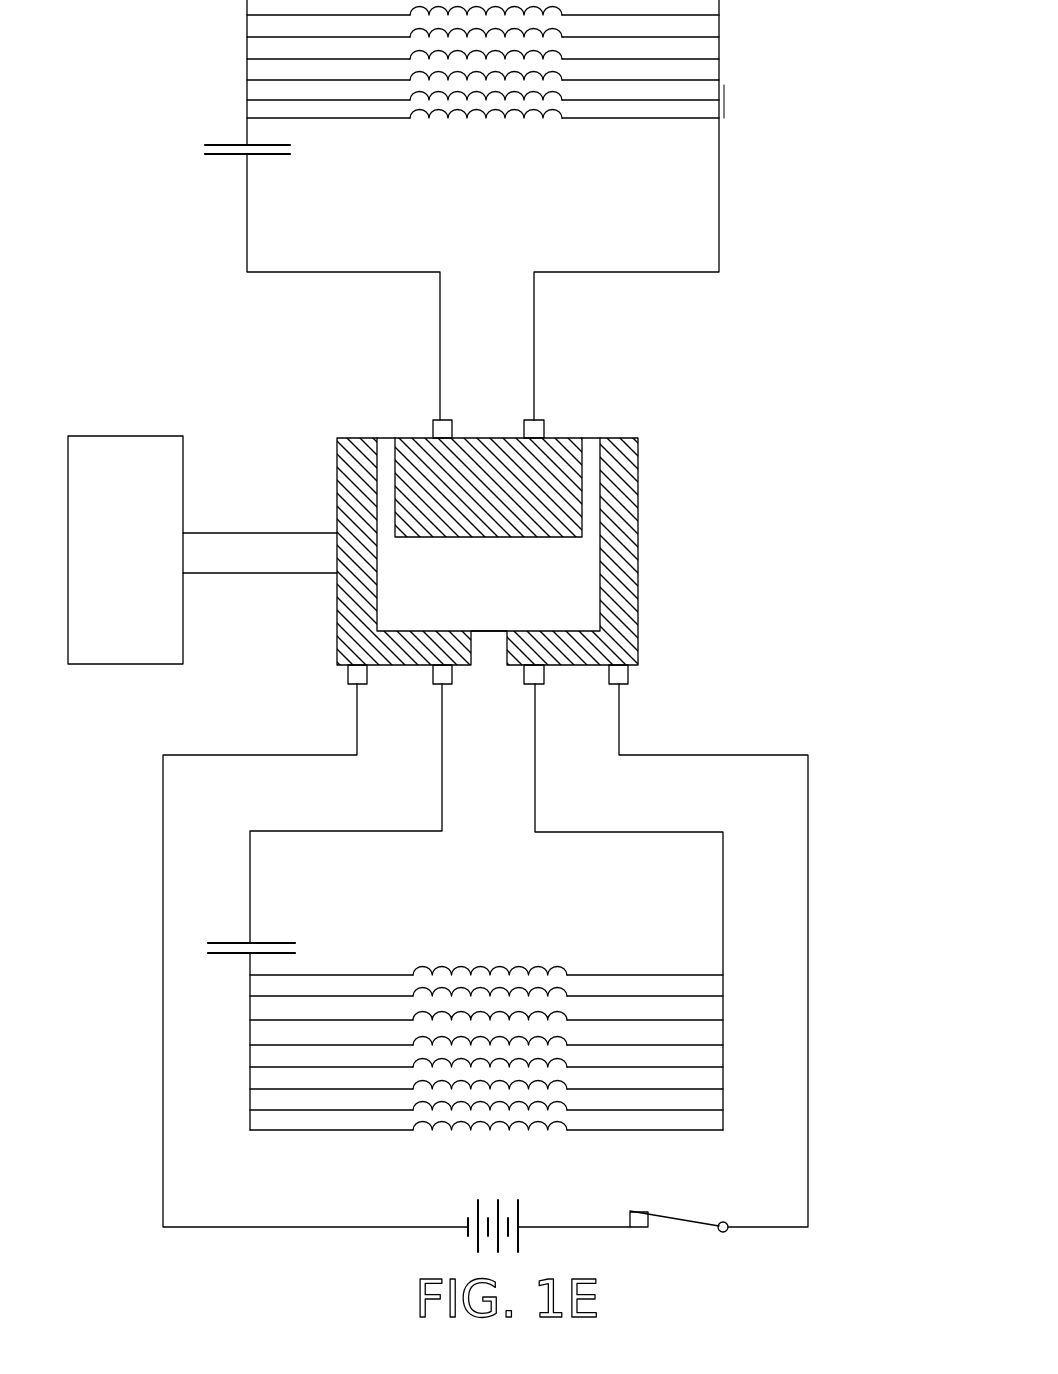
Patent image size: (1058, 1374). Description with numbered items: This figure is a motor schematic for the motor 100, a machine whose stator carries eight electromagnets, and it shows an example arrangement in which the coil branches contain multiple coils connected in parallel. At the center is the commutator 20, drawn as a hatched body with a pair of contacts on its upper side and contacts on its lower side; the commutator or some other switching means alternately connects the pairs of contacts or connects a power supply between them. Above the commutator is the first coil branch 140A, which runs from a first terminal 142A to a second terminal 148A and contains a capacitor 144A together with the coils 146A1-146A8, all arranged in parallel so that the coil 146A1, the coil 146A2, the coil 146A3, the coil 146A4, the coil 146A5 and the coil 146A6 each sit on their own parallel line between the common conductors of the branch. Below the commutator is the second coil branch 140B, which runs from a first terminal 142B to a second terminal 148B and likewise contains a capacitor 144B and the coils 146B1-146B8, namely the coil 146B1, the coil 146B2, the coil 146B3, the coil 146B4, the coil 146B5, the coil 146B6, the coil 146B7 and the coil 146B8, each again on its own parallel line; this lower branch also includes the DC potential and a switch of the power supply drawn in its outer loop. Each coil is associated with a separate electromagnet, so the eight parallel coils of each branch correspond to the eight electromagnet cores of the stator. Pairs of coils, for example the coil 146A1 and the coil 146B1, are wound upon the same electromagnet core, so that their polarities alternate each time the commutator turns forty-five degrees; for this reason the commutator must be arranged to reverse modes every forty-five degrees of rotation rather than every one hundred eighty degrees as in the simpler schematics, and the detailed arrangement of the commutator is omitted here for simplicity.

The motor 100 is at (190, 193).
The commutator 20 is at (676, 515).
The first coil branch 140A is at (613, 283).
The second coil branch 140B is at (657, 812).
The first terminal of first coil branch 142A is at (431, 420).
The second terminal of first coil branch 148A is at (543, 420).
The first terminal of second coil branch 142B is at (433, 686).
The second terminal of second coil branch 148B is at (545, 686).
The capacitor 144A is at (277, 156).
The capacitor 144B is at (263, 940).
The coils 146A1-146A8 is at (443, 119).
The coils 146B1-146B8 is at (459, 962).
The coil 146A1 is at (483, 11).
The coil 146A2 is at (483, 33).
The coil 146A3 is at (483, 55).
The coil 146A4 is at (483, 76).
The coil 146A5 is at (483, 96).
The coil 146A6 is at (483, 114).
The coil 146B1 is at (486, 970).
The coil 146B2 is at (486, 991).
The coil 146B3 is at (486, 1015).
The coil 146B4 is at (486, 1040).
The coil 146B5 is at (486, 1062).
The coil 146B6 is at (486, 1084).
The coil 146B7 is at (486, 1105).
The coil 146B8 is at (486, 1125).